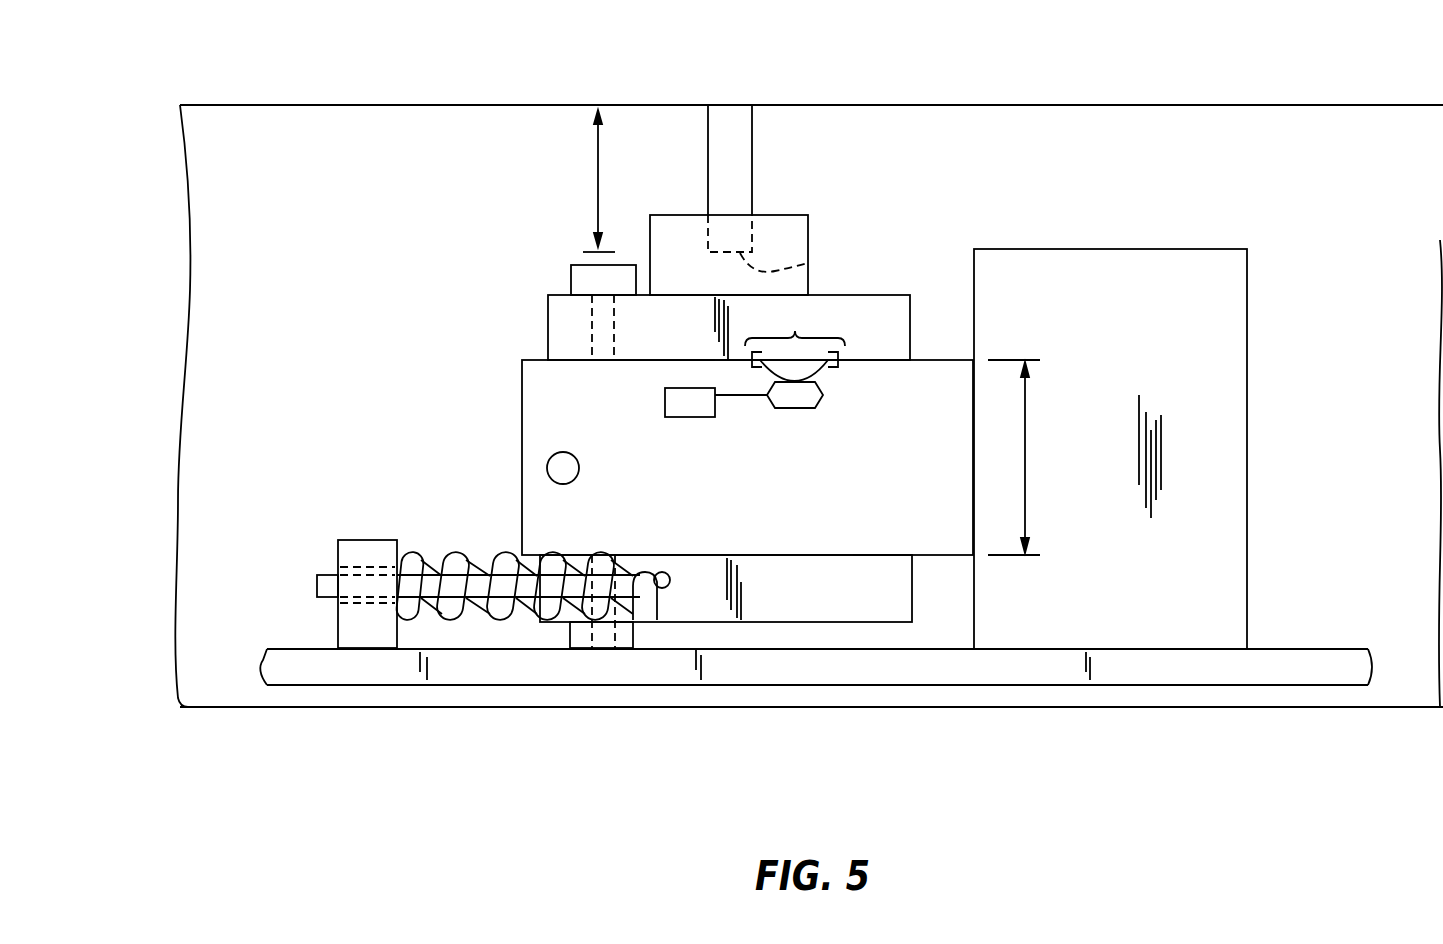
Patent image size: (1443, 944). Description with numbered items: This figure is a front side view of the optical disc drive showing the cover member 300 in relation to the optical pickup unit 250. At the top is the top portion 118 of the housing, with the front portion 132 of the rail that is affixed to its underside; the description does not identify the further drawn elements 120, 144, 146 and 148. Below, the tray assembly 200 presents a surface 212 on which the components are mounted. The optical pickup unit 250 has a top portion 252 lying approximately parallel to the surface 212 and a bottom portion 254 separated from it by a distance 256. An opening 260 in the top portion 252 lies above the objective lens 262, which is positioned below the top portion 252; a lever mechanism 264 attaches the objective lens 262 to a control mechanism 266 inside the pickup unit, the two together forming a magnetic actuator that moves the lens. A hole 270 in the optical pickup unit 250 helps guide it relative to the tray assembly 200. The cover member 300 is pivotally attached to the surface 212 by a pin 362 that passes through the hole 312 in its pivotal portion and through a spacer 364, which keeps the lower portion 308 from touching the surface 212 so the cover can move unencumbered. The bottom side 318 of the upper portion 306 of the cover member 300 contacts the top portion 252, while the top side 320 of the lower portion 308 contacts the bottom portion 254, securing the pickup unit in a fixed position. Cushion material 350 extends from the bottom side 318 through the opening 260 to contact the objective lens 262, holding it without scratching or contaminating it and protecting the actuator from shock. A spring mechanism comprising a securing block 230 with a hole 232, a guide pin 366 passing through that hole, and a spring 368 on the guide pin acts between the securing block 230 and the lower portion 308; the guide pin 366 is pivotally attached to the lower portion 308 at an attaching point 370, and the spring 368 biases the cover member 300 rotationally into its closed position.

The top portion 118 is at (1133, 104).
The housing block 120 is at (1143, 708).
The front portion 132 is at (728, 165).
The housing top surface 144 is at (733, 104).
The coupling block 146 is at (810, 263).
The gap distance 148 is at (597, 181).
The tray assembly 200 is at (309, 702).
The surface 212 is at (288, 648).
The securing block 230 is at (366, 528).
The hole 232 is at (370, 565).
The optical pickup unit 250 is at (492, 412).
The top portion 252 is at (946, 360).
The bottom portion 254 is at (946, 556).
The distance 256 is at (1025, 457).
The opening 260 is at (886, 428).
The objective lens 262 is at (795, 410).
The lever mechanism 264 is at (733, 396).
The control mechanism 266 is at (690, 417).
The hole 270 is at (565, 485).
The cover member 300 is at (759, 640).
The upper portion 306 is at (887, 328).
The lower portion 308 is at (865, 595).
The hole 312 is at (590, 322).
The bottom side 318 is at (702, 358).
The top side 320 is at (853, 557).
The cushion material 350 is at (815, 375).
The pin 362 is at (599, 690).
The spacer 364 is at (570, 635).
The guide pin 366 is at (317, 585).
The spring 368 is at (460, 553).
The attaching point 370 is at (665, 590).